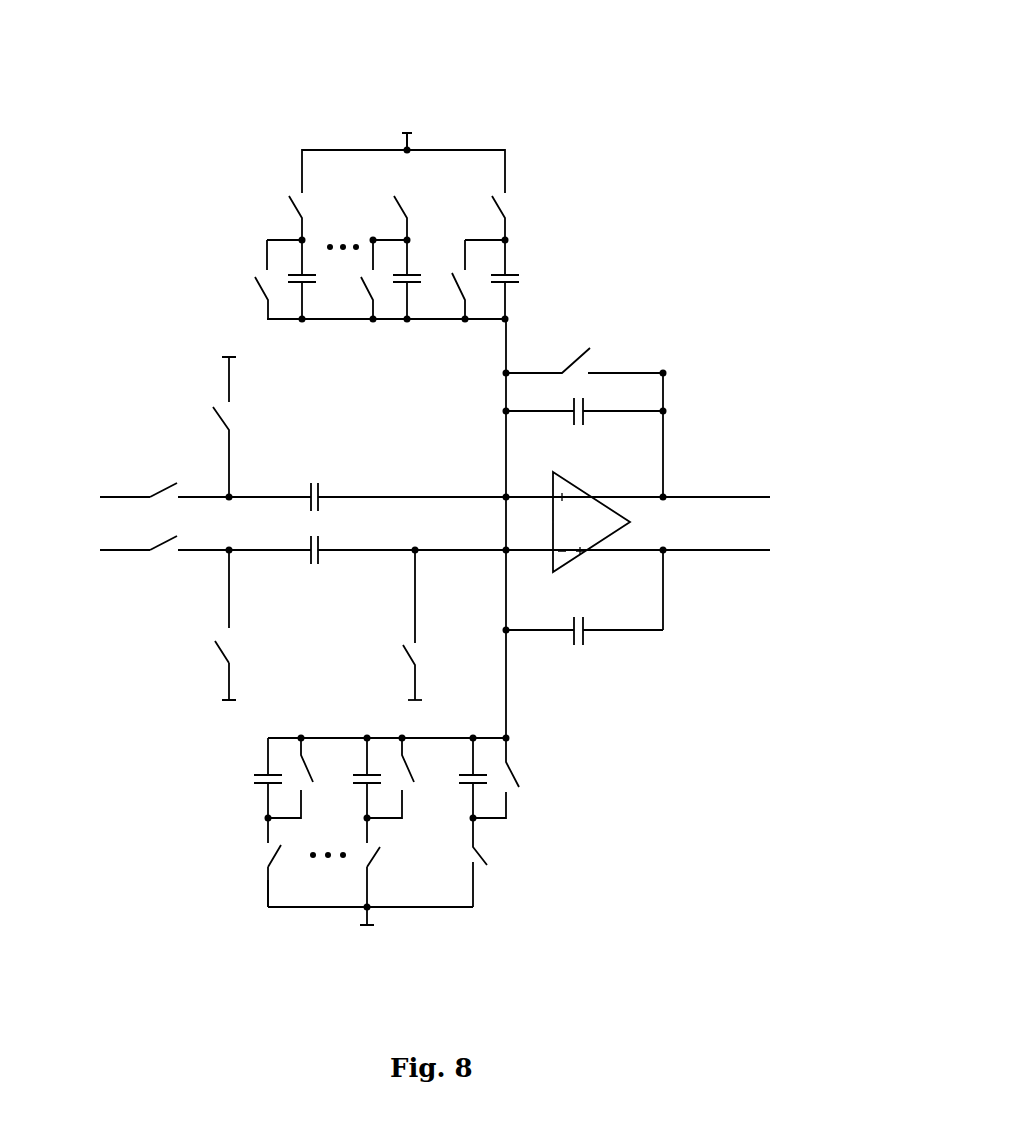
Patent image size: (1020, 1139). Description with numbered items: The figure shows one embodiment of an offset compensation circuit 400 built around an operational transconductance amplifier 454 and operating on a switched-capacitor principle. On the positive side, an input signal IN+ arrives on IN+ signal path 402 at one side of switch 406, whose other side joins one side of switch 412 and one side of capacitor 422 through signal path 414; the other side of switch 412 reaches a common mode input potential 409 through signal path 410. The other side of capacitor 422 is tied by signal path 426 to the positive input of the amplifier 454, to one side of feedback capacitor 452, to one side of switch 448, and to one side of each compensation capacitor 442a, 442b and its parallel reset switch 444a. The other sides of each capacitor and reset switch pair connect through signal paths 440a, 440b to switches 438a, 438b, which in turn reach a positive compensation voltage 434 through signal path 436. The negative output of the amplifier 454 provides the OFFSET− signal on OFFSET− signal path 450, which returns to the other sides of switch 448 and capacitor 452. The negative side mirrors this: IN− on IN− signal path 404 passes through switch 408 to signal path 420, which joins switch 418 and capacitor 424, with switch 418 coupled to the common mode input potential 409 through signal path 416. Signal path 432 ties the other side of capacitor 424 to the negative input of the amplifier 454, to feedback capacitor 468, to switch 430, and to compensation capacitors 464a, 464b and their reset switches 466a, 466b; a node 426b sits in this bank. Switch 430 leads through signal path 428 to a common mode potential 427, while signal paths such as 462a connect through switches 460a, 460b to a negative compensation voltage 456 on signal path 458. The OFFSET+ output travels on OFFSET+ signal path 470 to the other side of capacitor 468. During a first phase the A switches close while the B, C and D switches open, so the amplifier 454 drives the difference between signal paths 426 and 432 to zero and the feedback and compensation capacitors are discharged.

The offset compensation circuit 400 is at (580, 75).
The IN+ signal path 402 is at (117, 497).
The IN− signal path 404 is at (112, 553).
The switch 406 is at (165, 501).
The switch 408 is at (167, 545).
The common mode input potential 409 is at (230, 357).
The signal path 410 is at (231, 378).
The switch 412 is at (222, 419).
The signal path 414 is at (257, 497).
The signal path 416 is at (232, 682).
The switch 418 is at (220, 643).
The signal path 420 is at (257, 553).
The capacitor 422 is at (322, 490).
The capacitor 424 is at (322, 560).
The signal path 426 is at (420, 497).
The node 426b is at (373, 820).
The common mode potential 427 is at (415, 707).
The signal path 428 is at (416, 683).
The switch 430 is at (403, 650).
The signal path 432 is at (457, 533).
The positive compensation voltage 434 is at (409, 146).
The signal path 436 is at (327, 149).
The switch 438b is at (436, 187).
The switch 438a is at (500, 202).
The signal path 440b is at (373, 240).
The signal path 440a is at (467, 240).
The capacitor 442b is at (435, 268).
The capacitor 442a is at (510, 274).
The switch 444a is at (491, 283).
The switch 448 is at (588, 356).
The OFFSET− signal path 450 is at (713, 497).
The capacitor 452 is at (590, 417).
The operational transconductance amplifier 454 is at (588, 487).
The negative compensation voltage 456 is at (373, 927).
The signal path 458 is at (475, 900).
The switch 460b is at (341, 877).
The switch 460a is at (473, 850).
The signal path 462a is at (508, 803).
The capacitor 464b is at (353, 780).
The capacitor 464a is at (467, 787).
The switch 466b is at (408, 784).
The switch 466a is at (513, 773).
The capacitor 468 is at (588, 640).
The OFFSET+ signal path 470 is at (720, 551).